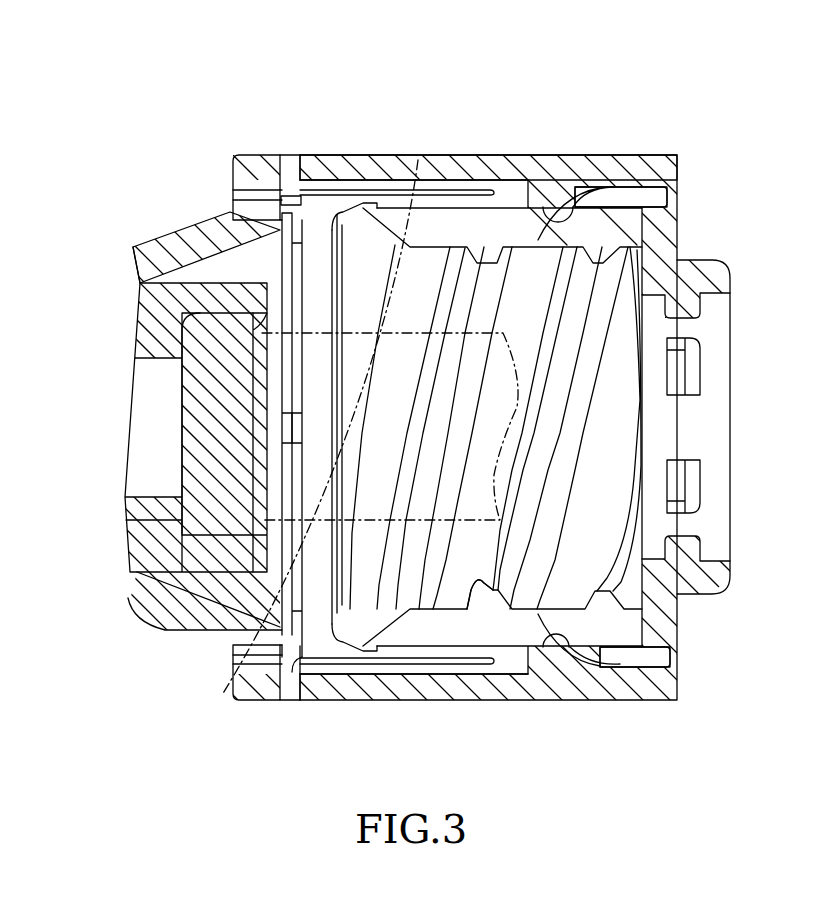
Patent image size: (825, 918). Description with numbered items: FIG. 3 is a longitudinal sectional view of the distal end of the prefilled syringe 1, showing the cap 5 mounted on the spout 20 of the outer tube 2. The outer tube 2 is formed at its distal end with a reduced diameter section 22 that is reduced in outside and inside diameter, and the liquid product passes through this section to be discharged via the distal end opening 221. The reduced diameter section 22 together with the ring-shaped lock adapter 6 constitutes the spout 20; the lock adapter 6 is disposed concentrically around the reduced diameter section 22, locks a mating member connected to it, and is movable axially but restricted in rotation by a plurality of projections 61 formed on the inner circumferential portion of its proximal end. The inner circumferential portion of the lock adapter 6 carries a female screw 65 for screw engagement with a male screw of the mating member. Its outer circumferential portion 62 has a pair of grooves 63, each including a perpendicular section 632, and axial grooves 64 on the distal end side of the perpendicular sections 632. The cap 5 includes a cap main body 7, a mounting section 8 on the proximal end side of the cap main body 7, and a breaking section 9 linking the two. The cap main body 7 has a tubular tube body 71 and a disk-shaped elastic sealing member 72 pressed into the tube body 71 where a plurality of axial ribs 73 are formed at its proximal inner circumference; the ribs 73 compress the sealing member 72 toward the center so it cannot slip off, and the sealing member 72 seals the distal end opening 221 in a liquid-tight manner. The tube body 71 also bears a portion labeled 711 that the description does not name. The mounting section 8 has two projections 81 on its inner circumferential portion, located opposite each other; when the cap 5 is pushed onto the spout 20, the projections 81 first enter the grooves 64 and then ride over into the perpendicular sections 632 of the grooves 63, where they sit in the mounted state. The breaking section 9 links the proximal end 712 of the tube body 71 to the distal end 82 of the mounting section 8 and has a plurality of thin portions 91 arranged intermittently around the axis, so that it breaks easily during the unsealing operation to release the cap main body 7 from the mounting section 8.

The syringe 1 is at (752, 132).
The syringe outer tube 2 is at (495, 100).
The spout 20 is at (334, 419).
The reduced diameter section 22 is at (364, 320).
The cap 5 is at (375, 100).
The lock adapter 6 is at (466, 185).
The cap main body 7 is at (266, 151).
The mounting section 8 is at (378, 150).
The breaking section 9 is at (291, 188).
The projections 61 is at (690, 310).
The outer circumferential portion 62 is at (423, 678).
The grooves 63 is at (639, 188).
The perpendicular section 632 is at (550, 207).
The grooves 64 is at (400, 190).
The female screw 65 is at (477, 600).
The tube body 71 is at (198, 232).
The spring end portion 711 is at (143, 246).
The proximal end 712 is at (288, 690).
The sealing member 72 is at (238, 662).
The ribs 73 is at (176, 322).
The projections 81 is at (574, 206).
The distal end 82 is at (301, 690).
The thin portions 91 is at (303, 205).
The distal end opening 221 is at (268, 536).